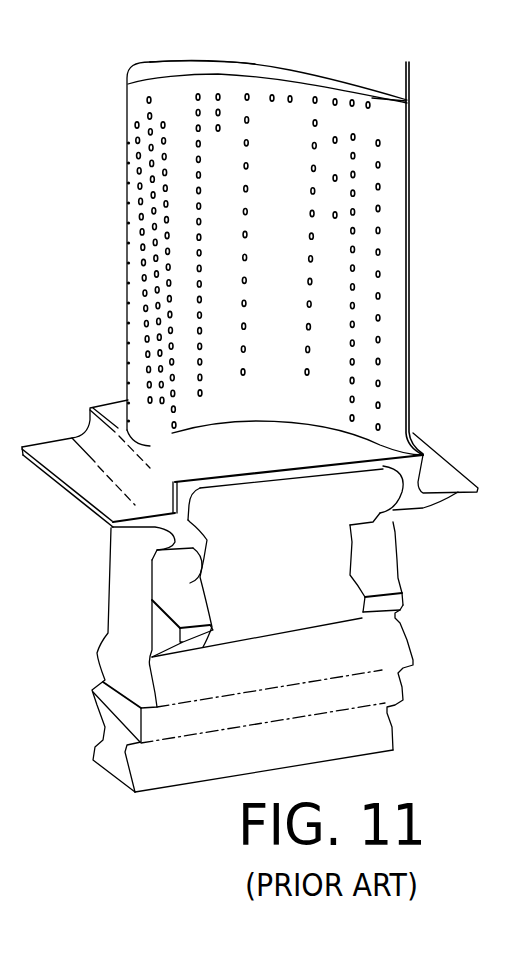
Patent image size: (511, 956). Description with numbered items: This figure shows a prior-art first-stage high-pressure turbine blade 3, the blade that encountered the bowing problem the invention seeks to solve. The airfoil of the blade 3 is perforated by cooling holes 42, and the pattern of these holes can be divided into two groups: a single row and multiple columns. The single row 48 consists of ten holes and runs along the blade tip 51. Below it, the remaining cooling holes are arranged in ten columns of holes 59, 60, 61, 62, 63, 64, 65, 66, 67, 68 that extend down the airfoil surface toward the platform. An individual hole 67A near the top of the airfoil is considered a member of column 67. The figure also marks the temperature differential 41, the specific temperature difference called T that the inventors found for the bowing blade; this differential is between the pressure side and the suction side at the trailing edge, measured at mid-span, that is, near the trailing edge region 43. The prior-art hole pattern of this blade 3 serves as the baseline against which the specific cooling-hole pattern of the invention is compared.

The first-stage high-pressure turbine blade 3 is at (273, 674).
The temperature differential 41 is at (382, 90).
The cooling holes 42 is at (381, 275).
The trailing edge region 43 is at (413, 222).
The row of holes 48 is at (392, 112).
The blade tip 51 is at (250, 62).
The column of holes 59 is at (380, 455).
The column of holes 60 is at (362, 445).
The column of holes 61 is at (340, 238).
The column of holes 62 is at (318, 385).
The column of holes 63 is at (245, 399).
The column of holes 64 is at (212, 155).
The column of holes 65 is at (203, 418).
The column of holes 66 is at (172, 459).
The column of holes 67 is at (162, 449).
The hole 67A is at (131, 103).
The column of holes 68 is at (150, 454).